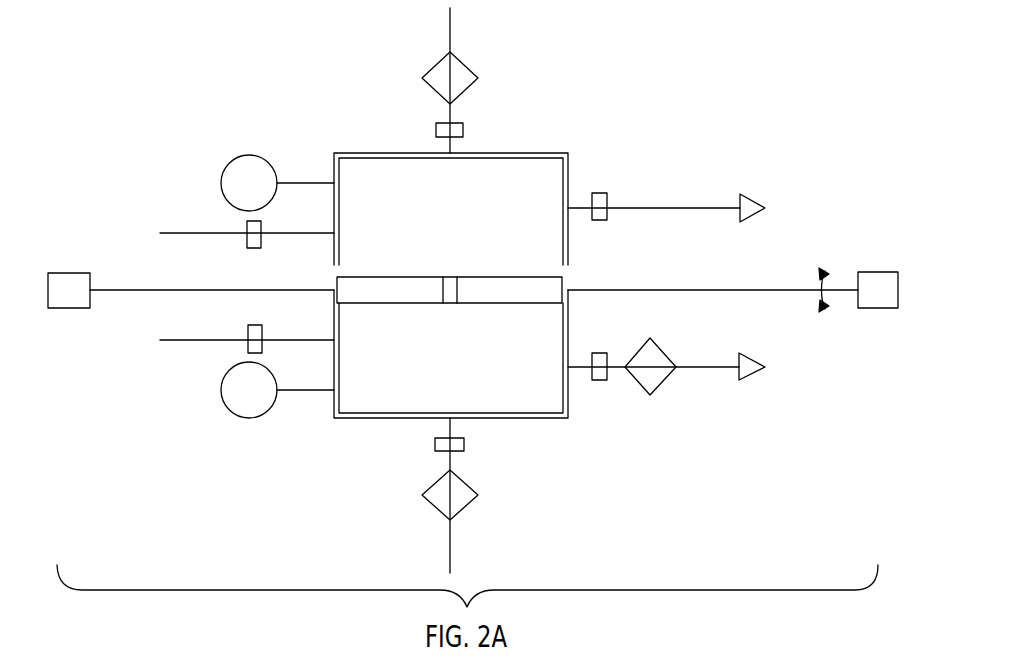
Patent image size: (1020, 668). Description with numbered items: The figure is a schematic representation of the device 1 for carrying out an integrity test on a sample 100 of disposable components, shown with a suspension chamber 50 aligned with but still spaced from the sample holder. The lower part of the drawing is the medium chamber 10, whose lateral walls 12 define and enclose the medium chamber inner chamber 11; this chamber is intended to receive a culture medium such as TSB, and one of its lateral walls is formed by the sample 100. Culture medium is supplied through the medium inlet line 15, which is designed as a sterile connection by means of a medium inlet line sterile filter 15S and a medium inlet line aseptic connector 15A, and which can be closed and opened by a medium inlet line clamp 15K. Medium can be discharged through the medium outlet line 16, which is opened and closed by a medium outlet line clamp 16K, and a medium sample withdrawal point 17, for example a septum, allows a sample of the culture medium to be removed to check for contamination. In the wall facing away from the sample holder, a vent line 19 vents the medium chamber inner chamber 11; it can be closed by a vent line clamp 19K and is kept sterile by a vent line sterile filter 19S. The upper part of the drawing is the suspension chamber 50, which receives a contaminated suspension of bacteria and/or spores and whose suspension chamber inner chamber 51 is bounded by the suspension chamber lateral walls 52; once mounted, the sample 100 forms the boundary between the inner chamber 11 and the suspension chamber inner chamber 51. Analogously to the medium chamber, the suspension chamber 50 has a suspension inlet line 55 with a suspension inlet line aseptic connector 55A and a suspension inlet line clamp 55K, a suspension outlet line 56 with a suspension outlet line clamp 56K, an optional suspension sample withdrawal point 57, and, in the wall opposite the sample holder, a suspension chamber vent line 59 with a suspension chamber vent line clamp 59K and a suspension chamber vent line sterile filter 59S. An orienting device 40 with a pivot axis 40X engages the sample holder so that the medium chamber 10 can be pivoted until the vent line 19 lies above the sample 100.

The device 1 is at (788, 530).
The medium chamber 10 is at (471, 393).
The medium chamber inner chamber 11 is at (459, 377).
The lateral walls 12 is at (377, 418).
The medium inlet line 15 is at (717, 368).
The medium inlet line aseptic connector 15A is at (760, 361).
The medium inlet line clamp 15K is at (604, 383).
The medium inlet line sterile filter 15S is at (660, 363).
The medium outlet line 16 is at (200, 340).
The medium outlet line clamp 16K is at (270, 334).
The medium sample withdrawal point 17 is at (251, 418).
The vent line 19 is at (450, 470).
The vent line clamp 19K is at (468, 450).
The vent line sterile filter 19S is at (436, 503).
The orienting device 40 is at (888, 300).
The pivot axis 40X is at (777, 291).
The suspension chamber 50 is at (471, 173).
The suspension chamber inner chamber 51 is at (459, 217).
The suspension chamber lateral walls 52 is at (380, 153).
The suspension inlet line 55 is at (716, 205).
The suspension inlet line aseptic connector 55A is at (765, 202).
The suspension inlet line clamp 55K is at (604, 194).
The suspension outlet line 56 is at (200, 233).
The suspension outlet line clamp 56K is at (269, 229).
The suspension sample withdrawal point 57 is at (249, 155).
The suspension chamber vent line 59 is at (443, 113).
The suspension chamber vent line clamp 59K is at (464, 131).
The suspension chamber vent line sterile filter 59S is at (457, 77).
The sample 100 is at (564, 284).